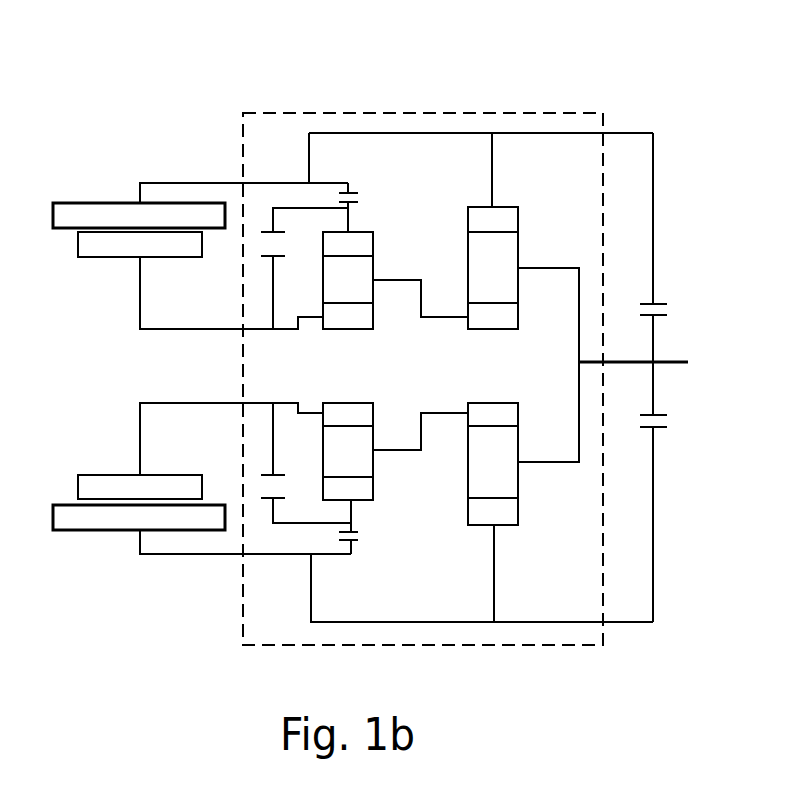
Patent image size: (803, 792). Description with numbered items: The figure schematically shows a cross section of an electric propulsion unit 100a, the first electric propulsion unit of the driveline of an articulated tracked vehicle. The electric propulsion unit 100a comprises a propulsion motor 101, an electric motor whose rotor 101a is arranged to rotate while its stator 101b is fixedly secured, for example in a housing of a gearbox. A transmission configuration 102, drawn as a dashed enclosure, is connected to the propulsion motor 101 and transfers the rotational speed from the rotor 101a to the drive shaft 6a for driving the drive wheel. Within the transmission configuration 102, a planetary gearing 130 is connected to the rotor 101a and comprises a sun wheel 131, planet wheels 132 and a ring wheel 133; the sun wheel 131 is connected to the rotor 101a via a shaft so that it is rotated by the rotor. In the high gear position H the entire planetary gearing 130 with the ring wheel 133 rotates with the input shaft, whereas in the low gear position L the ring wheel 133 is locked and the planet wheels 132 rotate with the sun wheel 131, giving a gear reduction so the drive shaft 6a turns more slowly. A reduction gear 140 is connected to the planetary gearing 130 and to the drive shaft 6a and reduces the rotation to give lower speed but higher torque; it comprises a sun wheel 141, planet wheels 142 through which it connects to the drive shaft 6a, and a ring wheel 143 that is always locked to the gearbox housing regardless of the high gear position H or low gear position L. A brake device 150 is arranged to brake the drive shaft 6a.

The electric propulsion unit 100a is at (255, 74).
The transmission configuration 102 is at (444, 104).
The propulsion motor 101 is at (121, 233).
The rotor 101a is at (118, 250).
The stator 101b is at (128, 212).
The high gear position H is at (260, 244).
The low gear position L is at (370, 195).
The planetary gearing 130 is at (306, 300).
The sun wheel 131 is at (352, 320).
The planet wheels 132 is at (363, 290).
The ring wheel 133 is at (357, 246).
The reduction gear 140 is at (491, 289).
The sun wheel 141 is at (493, 321).
The planet wheels 142 is at (508, 290).
The ring wheel 143 is at (505, 222).
The brake device 150 is at (672, 307).
The drive shaft 6a is at (674, 365).